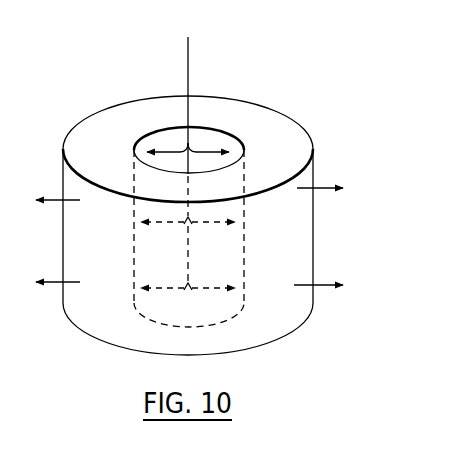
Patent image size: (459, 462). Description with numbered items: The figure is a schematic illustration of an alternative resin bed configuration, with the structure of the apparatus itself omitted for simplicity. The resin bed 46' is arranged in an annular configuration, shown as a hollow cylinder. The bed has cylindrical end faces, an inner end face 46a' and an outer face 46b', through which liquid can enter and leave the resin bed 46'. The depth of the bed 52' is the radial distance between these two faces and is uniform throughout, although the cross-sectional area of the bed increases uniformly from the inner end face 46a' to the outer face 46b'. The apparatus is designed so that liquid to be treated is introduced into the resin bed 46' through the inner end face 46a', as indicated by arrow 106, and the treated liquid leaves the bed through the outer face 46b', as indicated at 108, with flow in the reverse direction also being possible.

The resin bed 46' is at (175, 238).
The inner end face 46a' is at (233, 207).
The outer face 46b' is at (207, 236).
The depth of the bed 52' is at (98, 150).
The arrow 106 is at (188, 79).
The arrow 108 is at (317, 288).